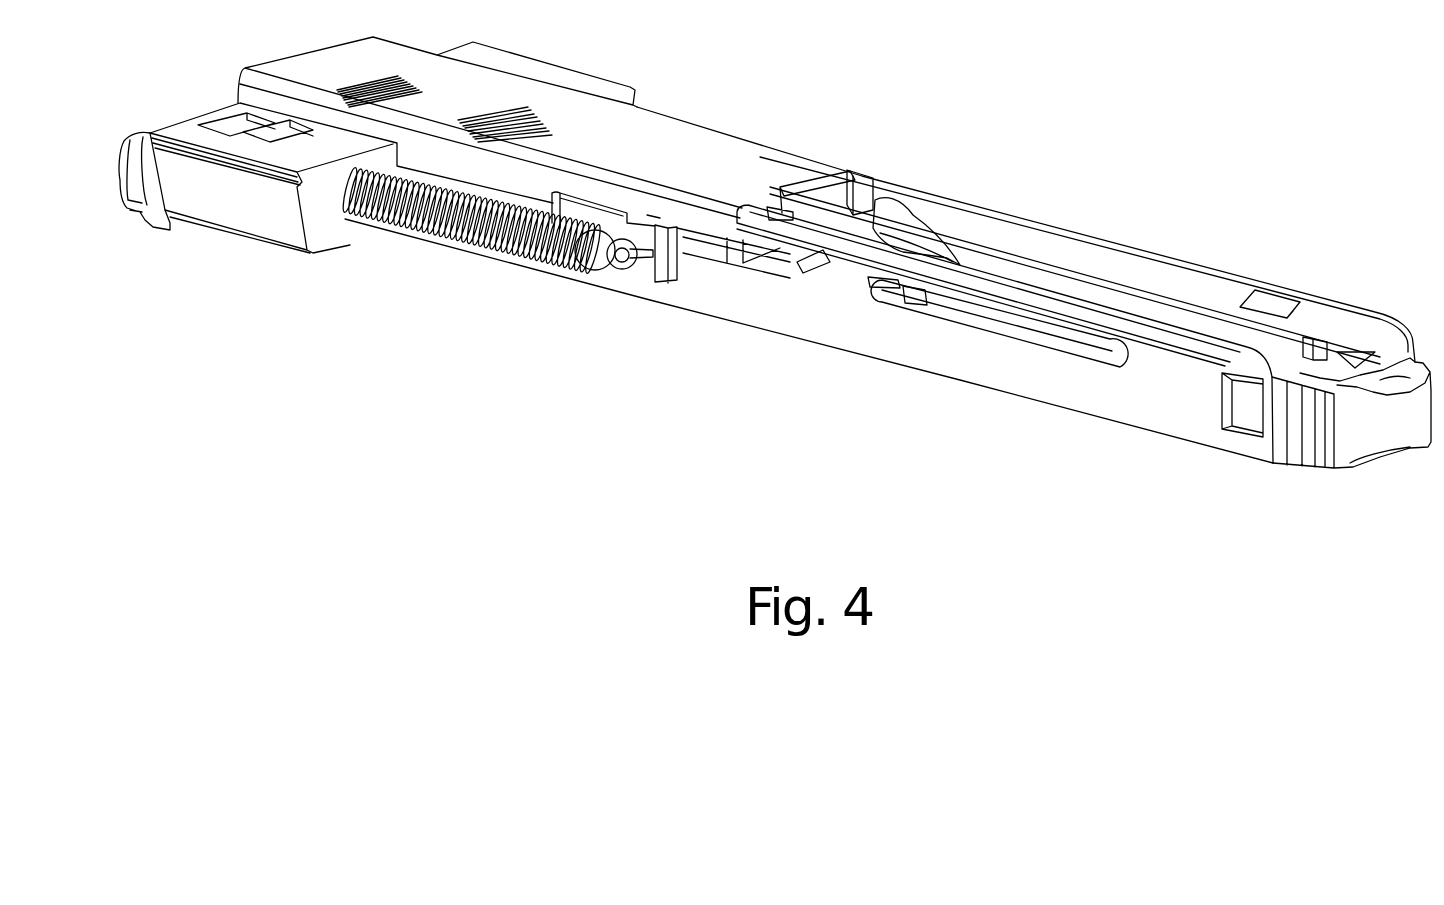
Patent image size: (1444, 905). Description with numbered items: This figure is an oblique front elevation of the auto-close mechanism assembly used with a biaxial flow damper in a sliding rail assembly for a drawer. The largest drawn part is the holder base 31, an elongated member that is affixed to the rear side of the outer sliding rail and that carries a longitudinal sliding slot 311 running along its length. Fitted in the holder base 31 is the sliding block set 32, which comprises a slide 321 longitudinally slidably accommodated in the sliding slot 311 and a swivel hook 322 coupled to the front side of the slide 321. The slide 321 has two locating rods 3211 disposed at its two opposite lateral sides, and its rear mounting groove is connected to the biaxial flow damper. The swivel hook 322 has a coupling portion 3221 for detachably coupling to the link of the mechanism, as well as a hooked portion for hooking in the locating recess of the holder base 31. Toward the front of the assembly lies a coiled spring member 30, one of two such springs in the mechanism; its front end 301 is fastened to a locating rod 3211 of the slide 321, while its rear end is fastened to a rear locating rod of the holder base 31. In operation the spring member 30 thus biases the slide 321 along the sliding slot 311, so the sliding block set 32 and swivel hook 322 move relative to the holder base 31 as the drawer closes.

The spring member 30 is at (487, 257).
The front end 301 is at (623, 275).
The holder base 31 is at (1170, 257).
The longitudinal sliding slot 311 is at (1030, 263).
The sliding block set 32 is at (756, 271).
The slide 321 is at (713, 250).
The locating rod 3211 is at (582, 278).
The swivel hook 322 is at (803, 268).
The coupling portion 3221 is at (863, 173).